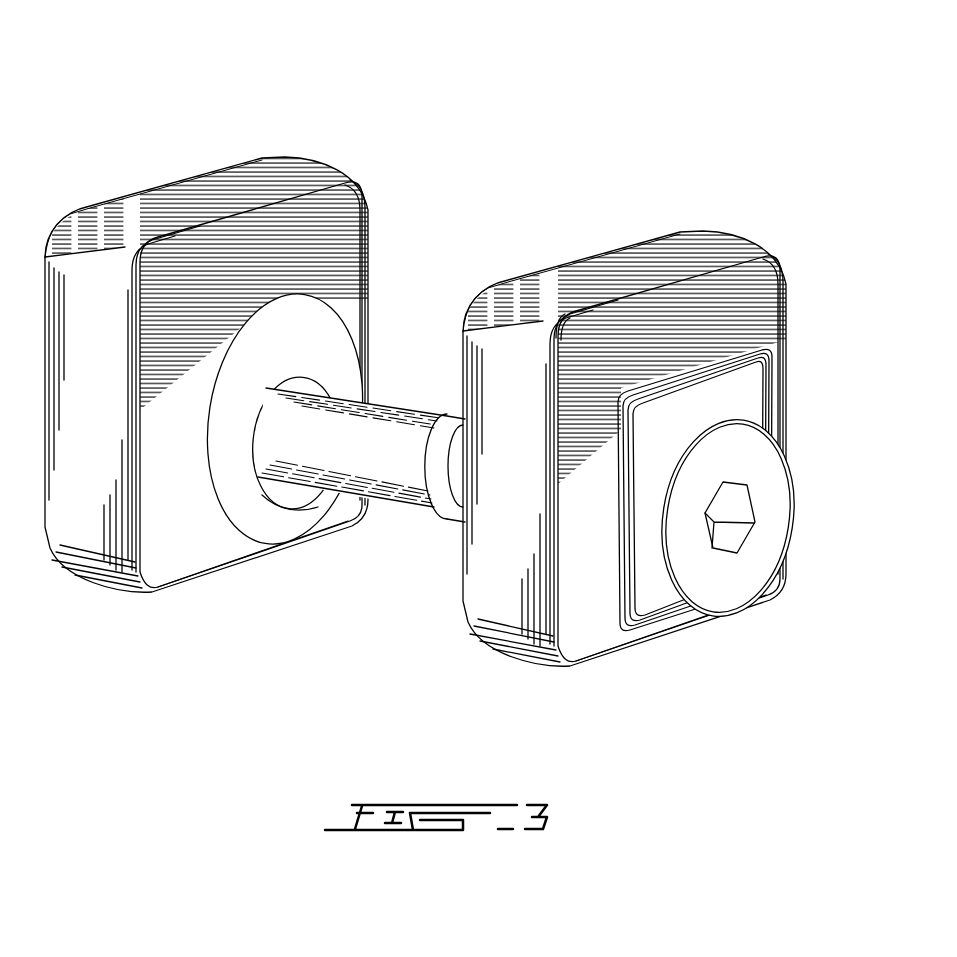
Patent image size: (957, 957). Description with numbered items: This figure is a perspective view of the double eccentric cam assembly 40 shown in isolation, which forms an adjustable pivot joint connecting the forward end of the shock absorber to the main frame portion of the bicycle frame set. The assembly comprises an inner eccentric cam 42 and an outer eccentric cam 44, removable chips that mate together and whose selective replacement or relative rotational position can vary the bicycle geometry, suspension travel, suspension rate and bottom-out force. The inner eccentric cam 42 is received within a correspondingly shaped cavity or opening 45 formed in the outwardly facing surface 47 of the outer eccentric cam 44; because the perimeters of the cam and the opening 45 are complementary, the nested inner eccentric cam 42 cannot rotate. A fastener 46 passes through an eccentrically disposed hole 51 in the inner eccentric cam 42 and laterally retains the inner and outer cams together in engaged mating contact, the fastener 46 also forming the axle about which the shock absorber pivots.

The double eccentric cam assembly 40 is at (490, 188).
The inner eccentric cam 42 is at (650, 553).
The outer eccentric cam 44 is at (617, 479).
The opening 45 is at (663, 334).
The fastener 46 is at (735, 584).
The outwardly facing surface 47 is at (580, 633).
The hole 51 is at (263, 498).